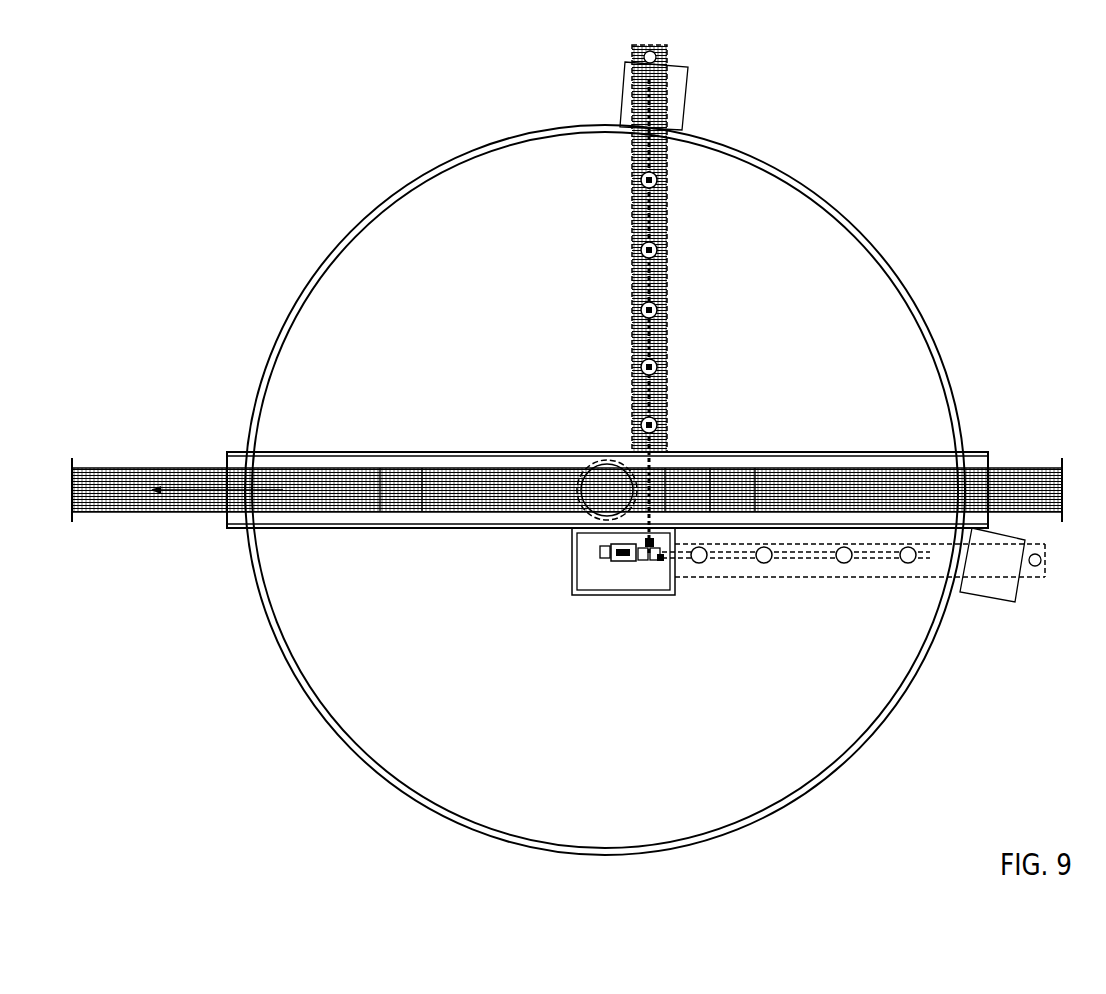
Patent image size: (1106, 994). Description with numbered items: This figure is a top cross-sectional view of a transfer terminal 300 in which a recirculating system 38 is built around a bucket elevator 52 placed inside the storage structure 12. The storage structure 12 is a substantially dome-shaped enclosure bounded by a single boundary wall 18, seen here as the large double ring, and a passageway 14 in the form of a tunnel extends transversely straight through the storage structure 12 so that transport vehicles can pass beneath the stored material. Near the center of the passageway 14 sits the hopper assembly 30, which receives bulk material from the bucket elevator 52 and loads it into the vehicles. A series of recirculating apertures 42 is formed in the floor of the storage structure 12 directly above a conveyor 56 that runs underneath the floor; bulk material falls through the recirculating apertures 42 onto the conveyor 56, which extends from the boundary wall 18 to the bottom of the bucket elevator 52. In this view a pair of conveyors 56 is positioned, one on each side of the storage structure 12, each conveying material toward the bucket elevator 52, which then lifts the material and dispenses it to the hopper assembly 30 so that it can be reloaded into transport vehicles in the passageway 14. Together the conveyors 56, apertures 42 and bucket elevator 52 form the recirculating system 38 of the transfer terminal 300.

The storage structure 12 is at (888, 256).
The boundary wall 18 is at (905, 282).
The transfer terminal 300 is at (972, 318).
The passageway 14 is at (930, 478).
The conveyor 56 is at (660, 340).
The recirculating apertures 42 is at (660, 425).
The hopper assembly 30 is at (574, 514).
The recirculating system 38 is at (597, 608).
The bucket elevator 52 is at (625, 563).